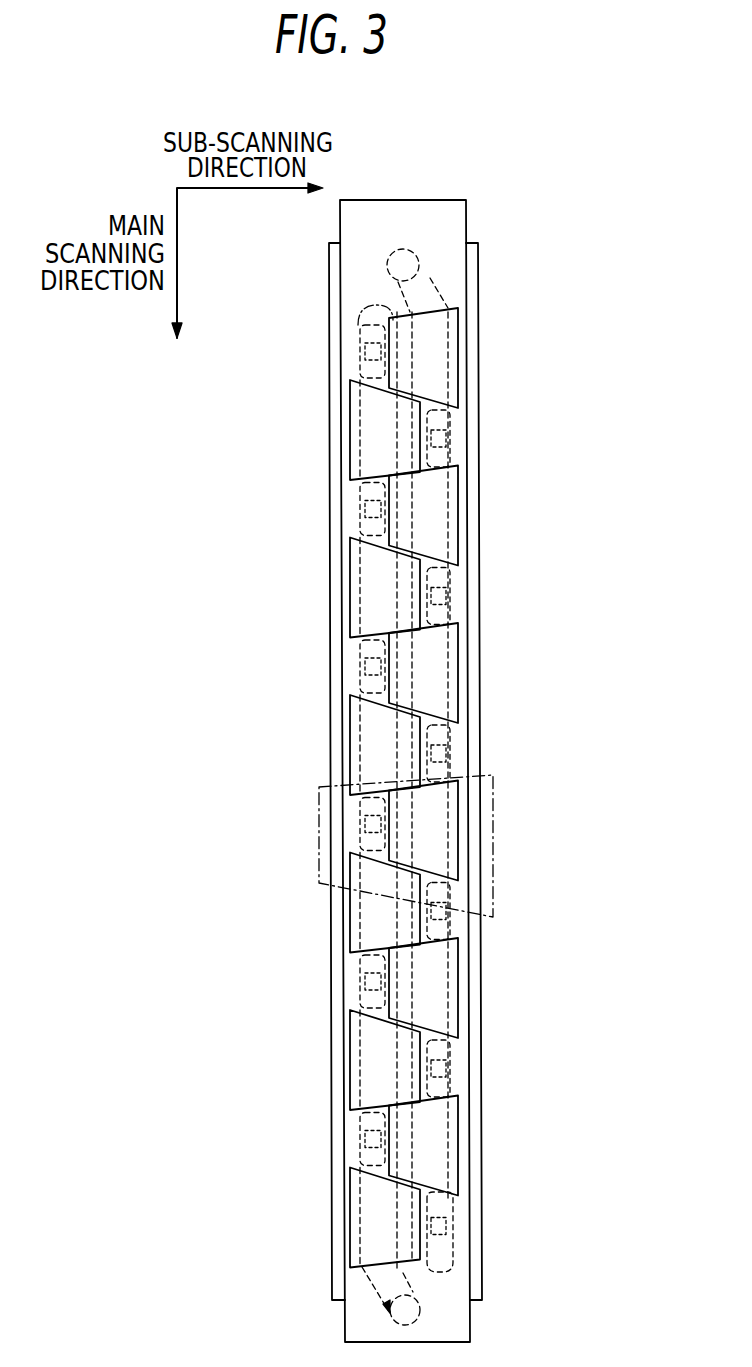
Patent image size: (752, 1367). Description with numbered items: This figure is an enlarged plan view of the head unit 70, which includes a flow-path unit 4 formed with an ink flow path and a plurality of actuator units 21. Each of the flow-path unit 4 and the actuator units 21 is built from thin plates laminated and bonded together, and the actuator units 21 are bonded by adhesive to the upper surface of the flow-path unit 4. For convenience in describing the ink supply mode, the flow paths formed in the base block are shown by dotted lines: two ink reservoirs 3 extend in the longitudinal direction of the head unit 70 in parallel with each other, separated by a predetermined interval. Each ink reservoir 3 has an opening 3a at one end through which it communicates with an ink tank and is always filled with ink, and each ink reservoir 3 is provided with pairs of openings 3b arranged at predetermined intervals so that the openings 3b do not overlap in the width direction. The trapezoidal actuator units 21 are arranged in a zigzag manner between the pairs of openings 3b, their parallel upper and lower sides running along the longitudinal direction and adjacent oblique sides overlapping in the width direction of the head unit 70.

The head unit 70 is at (440, 182).
The flow-path unit 4 is at (462, 198).
The actuator unit 21 is at (458, 360).
The openings 3b is at (430, 450).
The ink reservoir 3 is at (400, 1268).
The opening 3a is at (420, 1304).